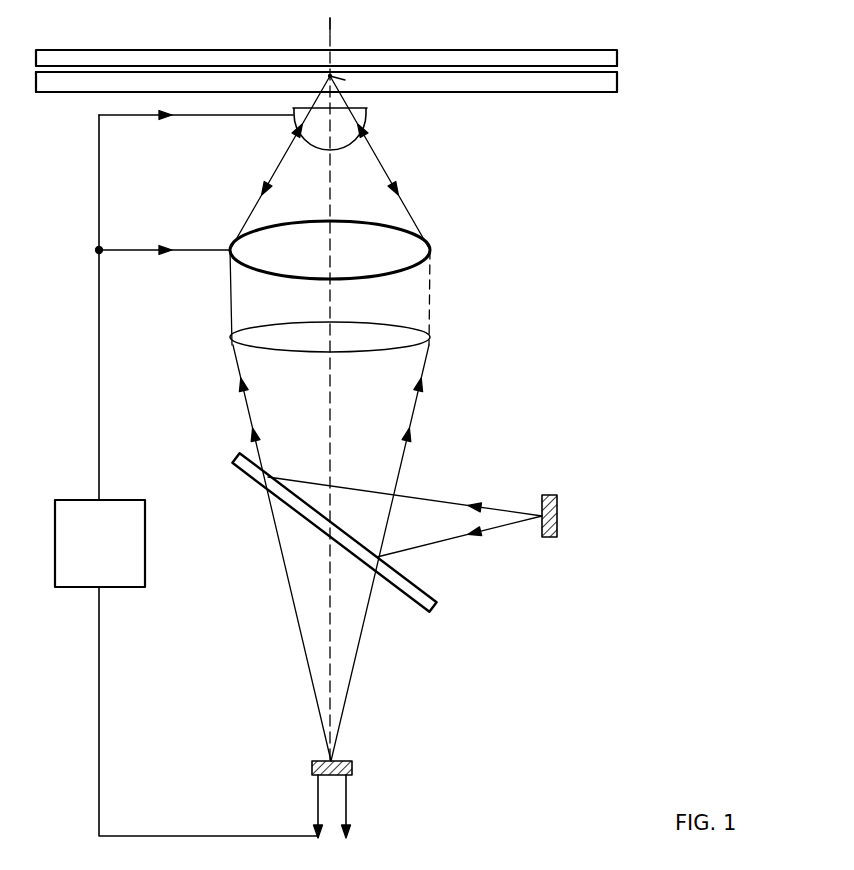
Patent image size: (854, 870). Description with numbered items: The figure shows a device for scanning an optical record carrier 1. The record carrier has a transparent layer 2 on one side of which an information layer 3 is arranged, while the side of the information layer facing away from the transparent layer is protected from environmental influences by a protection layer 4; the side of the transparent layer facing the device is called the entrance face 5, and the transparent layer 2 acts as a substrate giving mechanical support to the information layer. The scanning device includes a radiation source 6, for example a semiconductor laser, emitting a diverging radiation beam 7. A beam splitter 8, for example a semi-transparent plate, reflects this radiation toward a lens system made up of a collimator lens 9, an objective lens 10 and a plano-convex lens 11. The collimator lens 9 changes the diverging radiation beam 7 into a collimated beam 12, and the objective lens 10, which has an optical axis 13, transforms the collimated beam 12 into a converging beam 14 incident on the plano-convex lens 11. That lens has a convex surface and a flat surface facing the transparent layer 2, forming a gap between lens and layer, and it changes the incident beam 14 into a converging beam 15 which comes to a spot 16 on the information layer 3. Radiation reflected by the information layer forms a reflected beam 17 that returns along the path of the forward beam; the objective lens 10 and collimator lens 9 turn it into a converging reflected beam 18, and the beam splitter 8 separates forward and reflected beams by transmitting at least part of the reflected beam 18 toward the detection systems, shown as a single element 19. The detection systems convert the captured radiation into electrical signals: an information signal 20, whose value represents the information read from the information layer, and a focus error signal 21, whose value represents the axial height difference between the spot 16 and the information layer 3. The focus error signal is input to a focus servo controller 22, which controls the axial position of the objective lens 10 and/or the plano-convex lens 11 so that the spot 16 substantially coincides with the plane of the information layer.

The optical record carrier 1 is at (476, 26).
The transparent layer 2 is at (605, 92).
The information layer 3 is at (617, 71).
The protection layer 4 is at (617, 58).
The entrance face 5 is at (530, 92).
The radiation source 6 is at (549, 537).
The diverging radiation beam 7 is at (490, 505).
The beam splitter 8 is at (242, 468).
The collimator lens 9 is at (232, 338).
The objective lens 10 is at (235, 256).
The plano-convex lens 11 is at (360, 116).
The collimated beam 12 is at (430, 285).
The optical axis 13 is at (330, 25).
The converging beam 14 is at (296, 128).
The converging beam 15 is at (340, 80).
The spot 16 is at (330, 76).
The reflected beam 17 is at (262, 190).
The converging reflected beam 18 is at (256, 440).
The detection systems 19 is at (312, 765).
The information signal 20 is at (348, 797).
The focus error signal 21 is at (316, 803).
The focus servo controller 22 is at (133, 560).